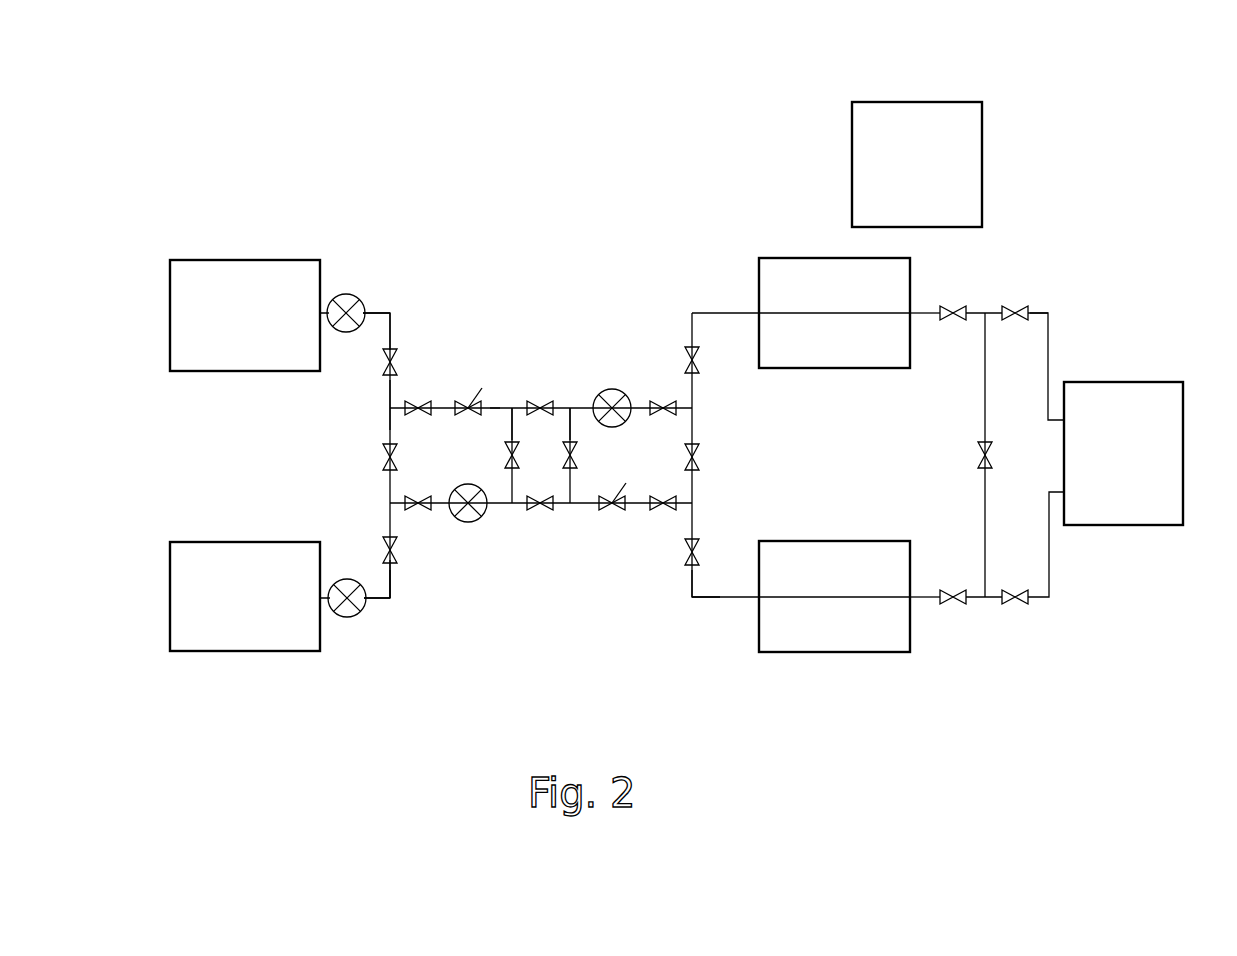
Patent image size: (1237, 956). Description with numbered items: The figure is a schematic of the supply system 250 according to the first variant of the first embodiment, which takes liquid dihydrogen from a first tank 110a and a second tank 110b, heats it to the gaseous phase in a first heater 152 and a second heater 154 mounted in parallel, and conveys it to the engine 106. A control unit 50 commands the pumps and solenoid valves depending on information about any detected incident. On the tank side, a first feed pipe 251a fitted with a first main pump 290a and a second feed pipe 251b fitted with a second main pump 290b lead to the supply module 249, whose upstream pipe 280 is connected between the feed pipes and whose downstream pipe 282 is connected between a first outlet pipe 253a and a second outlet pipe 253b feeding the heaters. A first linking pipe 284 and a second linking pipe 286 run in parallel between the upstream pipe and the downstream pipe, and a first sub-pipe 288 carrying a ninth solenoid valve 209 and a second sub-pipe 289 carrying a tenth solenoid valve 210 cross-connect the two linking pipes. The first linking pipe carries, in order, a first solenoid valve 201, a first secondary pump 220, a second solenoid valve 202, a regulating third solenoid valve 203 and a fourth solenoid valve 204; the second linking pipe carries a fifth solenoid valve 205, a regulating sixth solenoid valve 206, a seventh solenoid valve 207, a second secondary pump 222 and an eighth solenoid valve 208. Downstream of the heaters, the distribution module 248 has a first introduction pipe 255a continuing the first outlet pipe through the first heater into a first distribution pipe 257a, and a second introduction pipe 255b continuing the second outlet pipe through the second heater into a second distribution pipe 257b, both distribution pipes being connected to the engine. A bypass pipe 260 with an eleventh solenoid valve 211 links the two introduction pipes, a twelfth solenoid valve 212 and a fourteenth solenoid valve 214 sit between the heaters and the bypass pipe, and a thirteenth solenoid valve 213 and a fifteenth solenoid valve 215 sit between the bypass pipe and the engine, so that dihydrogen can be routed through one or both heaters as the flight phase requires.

The control unit 50 is at (977, 160).
The engine 106 is at (1170, 495).
The first tank 110a is at (185, 343).
The second tank 110b is at (200, 548).
The first heater 152 is at (813, 258).
The second heater 154 is at (847, 640).
The first solenoid valve 201 is at (408, 503).
The second solenoid valve 202 is at (548, 512).
The third solenoid valve 203 is at (622, 520).
The fourth solenoid valve 204 is at (693, 503).
The fifth solenoid valve 205 is at (407, 413).
The sixth solenoid valve 206 is at (468, 398).
The seventh solenoid valve 207 is at (535, 400).
The eighth solenoid valve 208 is at (693, 410).
The ninth solenoid valve 209 is at (505, 455).
The tenth solenoid valve 210 is at (576, 454).
The eleventh solenoid valve 211 is at (978, 465).
The twelfth solenoid valve 212 is at (962, 307).
The thirteenth solenoid valve 213 is at (1013, 312).
The fourteenth solenoid valve 214 is at (957, 607).
The fifteenth solenoid valve 215 is at (1012, 607).
The first secondary pump 220 is at (472, 524).
The second secondary pump 222 is at (607, 388).
The distribution module 248 is at (1045, 254).
The supply module 249 is at (487, 275).
The supply system 250 is at (377, 252).
The first feed pipe 251a is at (330, 310).
The second feed pipe 251b is at (333, 615).
The first outlet pipe 253a is at (742, 312).
The second outlet pipe 253b is at (723, 600).
The first introduction pipe 255a is at (918, 318).
The second introduction pipe 255b is at (915, 593).
The first distribution pipe 257a is at (1050, 372).
The second distribution pipe 257b is at (1050, 545).
The bypass pipe 260 is at (983, 398).
The upstream pipe 280 is at (393, 603).
The downstream pipe 282 is at (690, 583).
The first linking pipe 284 is at (437, 493).
The second linking pipe 286 is at (423, 423).
The first sub-pipe 288 is at (505, 407).
The second sub-pipe 289 is at (565, 407).
The first main pump 290a is at (390, 313).
The second main pump 290b is at (365, 605).